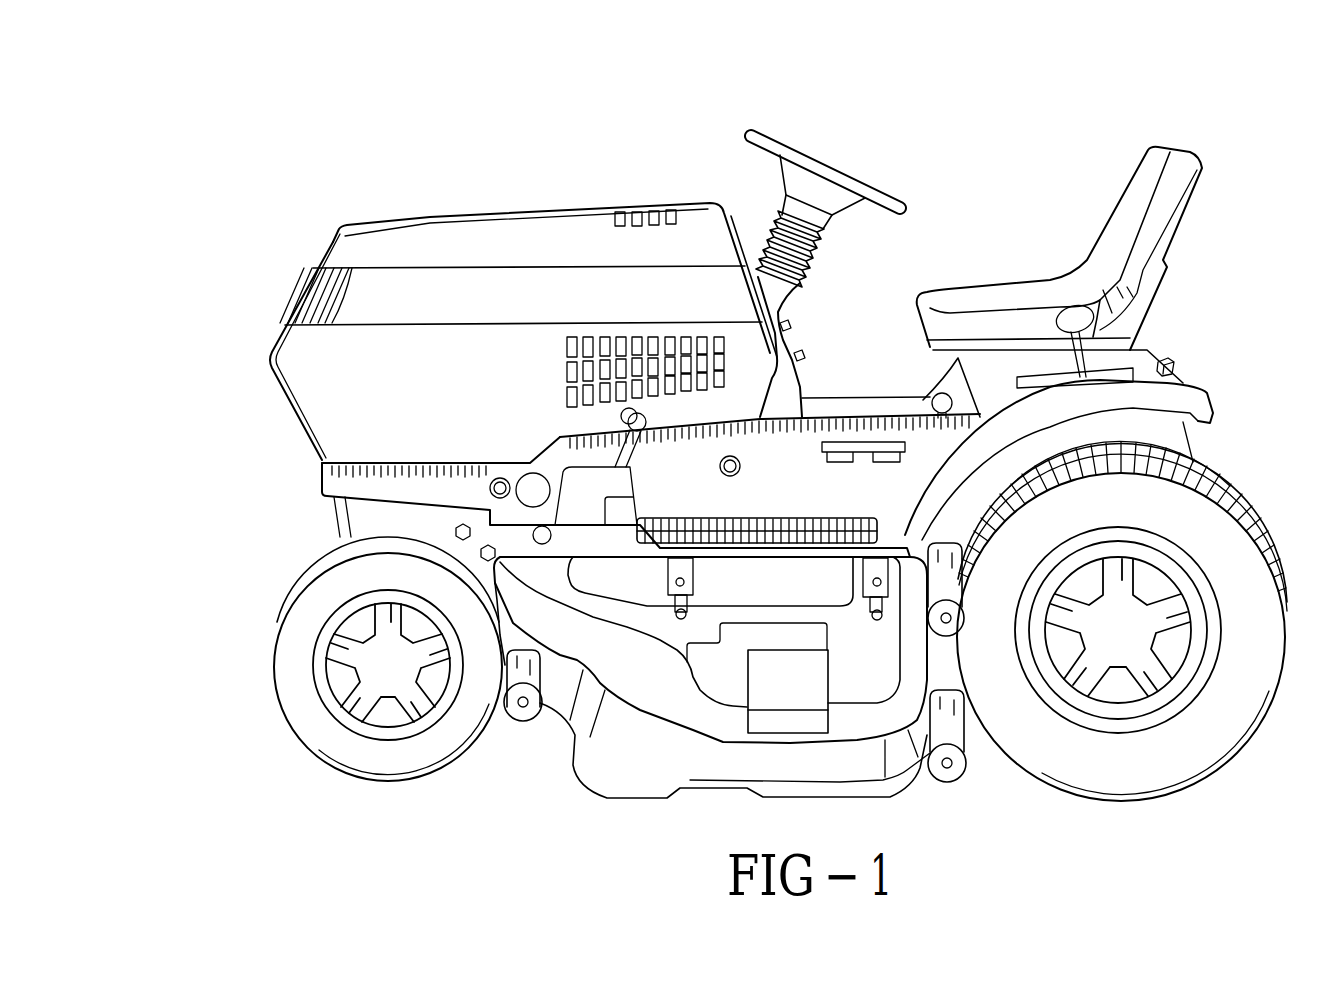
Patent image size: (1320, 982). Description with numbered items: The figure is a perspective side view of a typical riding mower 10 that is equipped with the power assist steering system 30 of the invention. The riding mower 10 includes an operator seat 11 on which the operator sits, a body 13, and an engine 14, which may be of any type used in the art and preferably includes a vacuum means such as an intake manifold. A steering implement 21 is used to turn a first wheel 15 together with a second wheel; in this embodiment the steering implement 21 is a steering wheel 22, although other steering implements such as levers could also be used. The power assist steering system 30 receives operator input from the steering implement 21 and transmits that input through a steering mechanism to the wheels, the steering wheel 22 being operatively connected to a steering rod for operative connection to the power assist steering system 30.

The riding mower 10 is at (1041, 138).
The operator seat 11 is at (1160, 153).
The body 13 is at (351, 528).
The engine 14 is at (284, 282).
The first wheel 15 is at (305, 666).
The steering implement 21 is at (793, 244).
The steering wheel 22 is at (752, 132).
The power assist steering system 30 is at (272, 450).